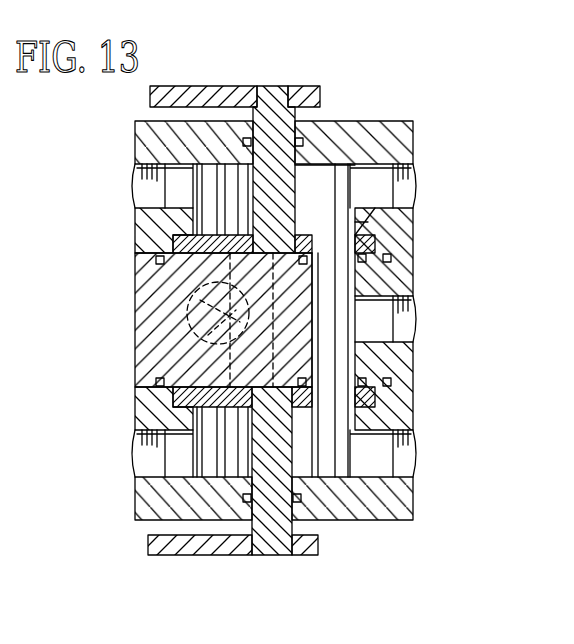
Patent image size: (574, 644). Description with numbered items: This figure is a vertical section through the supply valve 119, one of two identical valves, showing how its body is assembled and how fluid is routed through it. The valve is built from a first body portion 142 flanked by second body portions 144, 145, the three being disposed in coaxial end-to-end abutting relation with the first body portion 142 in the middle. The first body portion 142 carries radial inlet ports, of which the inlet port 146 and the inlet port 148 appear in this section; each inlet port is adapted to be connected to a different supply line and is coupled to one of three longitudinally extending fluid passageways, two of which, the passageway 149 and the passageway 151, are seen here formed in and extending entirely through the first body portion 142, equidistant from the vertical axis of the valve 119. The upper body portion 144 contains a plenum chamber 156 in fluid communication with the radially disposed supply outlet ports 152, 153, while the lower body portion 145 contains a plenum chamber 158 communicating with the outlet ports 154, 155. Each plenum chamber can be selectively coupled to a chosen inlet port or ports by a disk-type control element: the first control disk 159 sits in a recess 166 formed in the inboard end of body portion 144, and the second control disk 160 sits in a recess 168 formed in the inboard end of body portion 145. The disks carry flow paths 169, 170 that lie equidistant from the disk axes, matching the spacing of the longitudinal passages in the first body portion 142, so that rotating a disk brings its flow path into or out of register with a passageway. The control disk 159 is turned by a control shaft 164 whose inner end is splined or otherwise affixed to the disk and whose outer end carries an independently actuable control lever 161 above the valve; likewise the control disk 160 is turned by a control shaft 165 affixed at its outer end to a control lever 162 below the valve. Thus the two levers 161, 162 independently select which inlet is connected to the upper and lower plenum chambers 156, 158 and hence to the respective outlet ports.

The supply valve 119 is at (349, 98).
The control lever 161 is at (242, 62).
The control shaft 164 is at (272, 112).
The second body portion 144 is at (417, 145).
The supply outlet port 152 is at (137, 185).
The plenum chamber 156 is at (230, 183).
The supply outlet port 153 is at (408, 190).
The first disk-type control element 159 is at (175, 237).
The first body portion 142 is at (398, 279).
The flow path 169 is at (356, 225).
The recess 166 is at (375, 250).
The radial inlet port 146 is at (198, 325).
The longitudinally extending fluid passageway 149 is at (240, 281).
The radial inlet port 148 is at (410, 320).
The longitudinally extending fluid passageway 151 is at (387, 373).
The second disk-type control element 160 is at (182, 390).
The recess 168 is at (375, 413).
The flow path 170 is at (343, 403).
The supply outlet port 154 is at (140, 453).
The plenum chamber 158 is at (317, 460).
The supply outlet port 155 is at (410, 463).
The second body portion 145 is at (403, 507).
The control shaft 165 is at (273, 552).
The control lever 162 is at (222, 555).